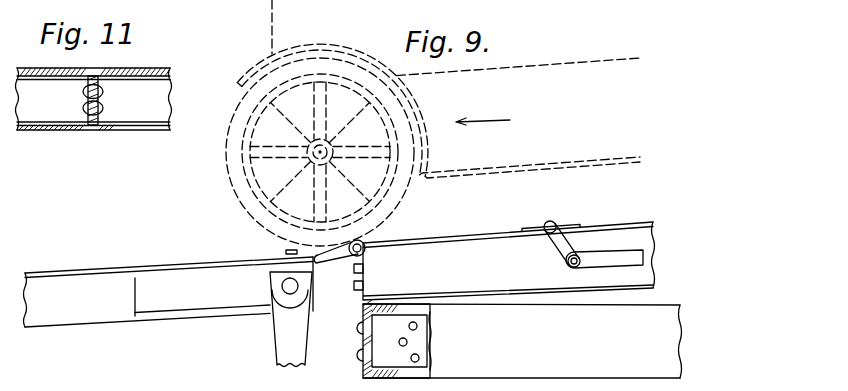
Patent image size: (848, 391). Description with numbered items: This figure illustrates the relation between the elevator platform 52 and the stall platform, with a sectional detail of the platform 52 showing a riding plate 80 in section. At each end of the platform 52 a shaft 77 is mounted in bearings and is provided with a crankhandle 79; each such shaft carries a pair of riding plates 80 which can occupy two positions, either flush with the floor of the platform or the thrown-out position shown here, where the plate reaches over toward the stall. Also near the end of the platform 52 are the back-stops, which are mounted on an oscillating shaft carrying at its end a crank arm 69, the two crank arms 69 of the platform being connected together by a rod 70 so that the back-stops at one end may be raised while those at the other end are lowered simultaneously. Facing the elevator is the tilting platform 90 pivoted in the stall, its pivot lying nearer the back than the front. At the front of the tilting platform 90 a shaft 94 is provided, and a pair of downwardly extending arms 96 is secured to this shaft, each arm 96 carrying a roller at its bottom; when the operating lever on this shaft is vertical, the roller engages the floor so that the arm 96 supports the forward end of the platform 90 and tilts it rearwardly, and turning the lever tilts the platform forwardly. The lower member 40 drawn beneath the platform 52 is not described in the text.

In FIG. 9, the frame member 40 is at (664, 316).
In FIG. 11, the platform 52 is at (170, 70).
In FIG. 9, the platform 52 is at (651, 224).
In FIG. 9, the crank arm 69 is at (562, 249).
In FIG. 9, the rod 70 is at (611, 263).
In FIG. 9, the shaft 77 is at (366, 246).
In FIG. 9, the crankhandle 79 is at (334, 263).
In FIG. 11, the riding plate 80 is at (115, 71).
In FIG. 9, the riding plate 80 is at (287, 251).
In FIG. 9, the tilting platform 90 is at (186, 263).
In FIG. 9, the shaft 94 is at (282, 287).
In FIG. 9, the arm 96 is at (282, 336).